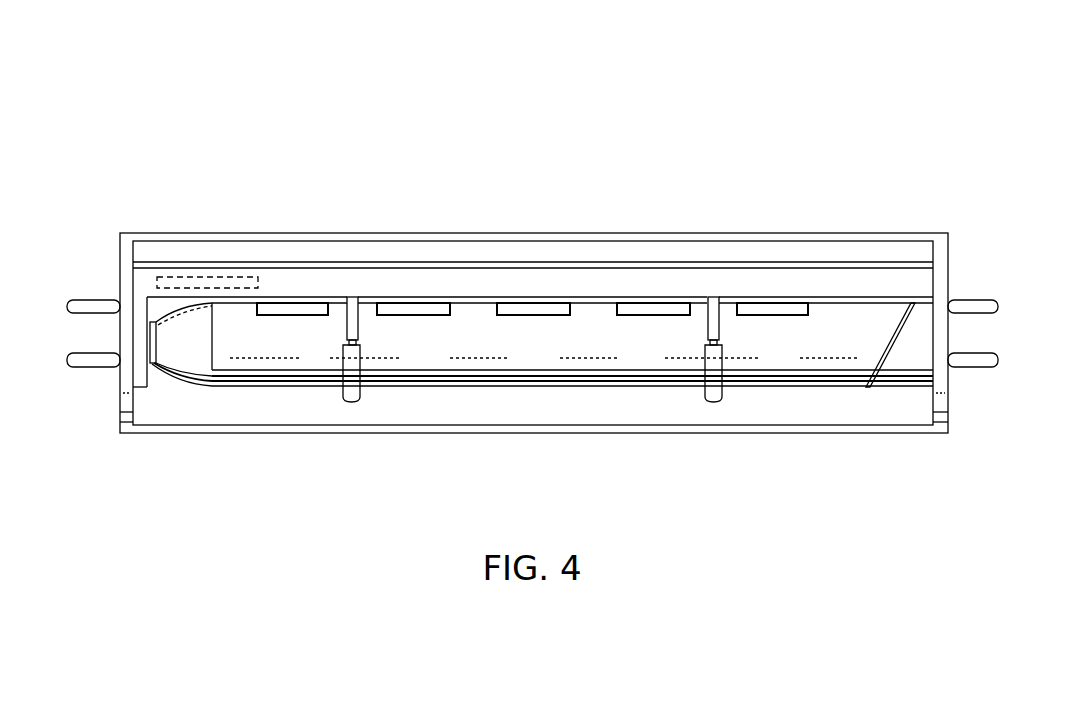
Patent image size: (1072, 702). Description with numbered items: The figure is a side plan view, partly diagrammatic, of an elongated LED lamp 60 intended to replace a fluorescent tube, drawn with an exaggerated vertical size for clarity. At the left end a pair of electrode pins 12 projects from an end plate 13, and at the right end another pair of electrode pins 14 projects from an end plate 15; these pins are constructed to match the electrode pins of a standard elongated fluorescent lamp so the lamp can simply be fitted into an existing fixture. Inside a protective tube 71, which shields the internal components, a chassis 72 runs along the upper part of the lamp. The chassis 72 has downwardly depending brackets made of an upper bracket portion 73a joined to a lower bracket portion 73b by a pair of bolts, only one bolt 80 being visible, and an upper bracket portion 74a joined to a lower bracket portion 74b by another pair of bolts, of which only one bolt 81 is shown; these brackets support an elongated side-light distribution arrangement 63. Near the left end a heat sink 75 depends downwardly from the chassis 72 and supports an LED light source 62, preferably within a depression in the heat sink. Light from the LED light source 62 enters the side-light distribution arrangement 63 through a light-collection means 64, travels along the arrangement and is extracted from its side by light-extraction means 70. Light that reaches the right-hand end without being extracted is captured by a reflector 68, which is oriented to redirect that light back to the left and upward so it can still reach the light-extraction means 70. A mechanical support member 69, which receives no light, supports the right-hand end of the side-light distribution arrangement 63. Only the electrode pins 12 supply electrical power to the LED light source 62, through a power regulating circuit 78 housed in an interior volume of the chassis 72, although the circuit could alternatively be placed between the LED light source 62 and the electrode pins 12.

The elongated LED lamp 60 is at (114, 144).
The electrode pins 12 is at (67, 305).
The end plate 13 is at (118, 262).
The electrode pins 14 is at (998, 305).
The end plate 15 is at (950, 262).
The LED light source 62 is at (182, 265).
The side-light distribution arrangement 63 is at (518, 362).
The light-collection means 64 is at (190, 377).
The reflector 68 is at (868, 387).
The mechanical support member 69 is at (897, 345).
The light-extraction means 70 is at (292, 298).
The protective tube 71 is at (385, 232).
The chassis 72 is at (288, 257).
The upper bracket portion 73a is at (358, 325).
The lower bracket portion 73b is at (360, 390).
The upper bracket portion 74a is at (706, 325).
The lower bracket portion 74b is at (704, 390).
The heat sink 75 is at (142, 390).
The power regulating circuit 78 is at (212, 280).
The bolt 80 is at (347, 342).
The bolt 81 is at (720, 342).